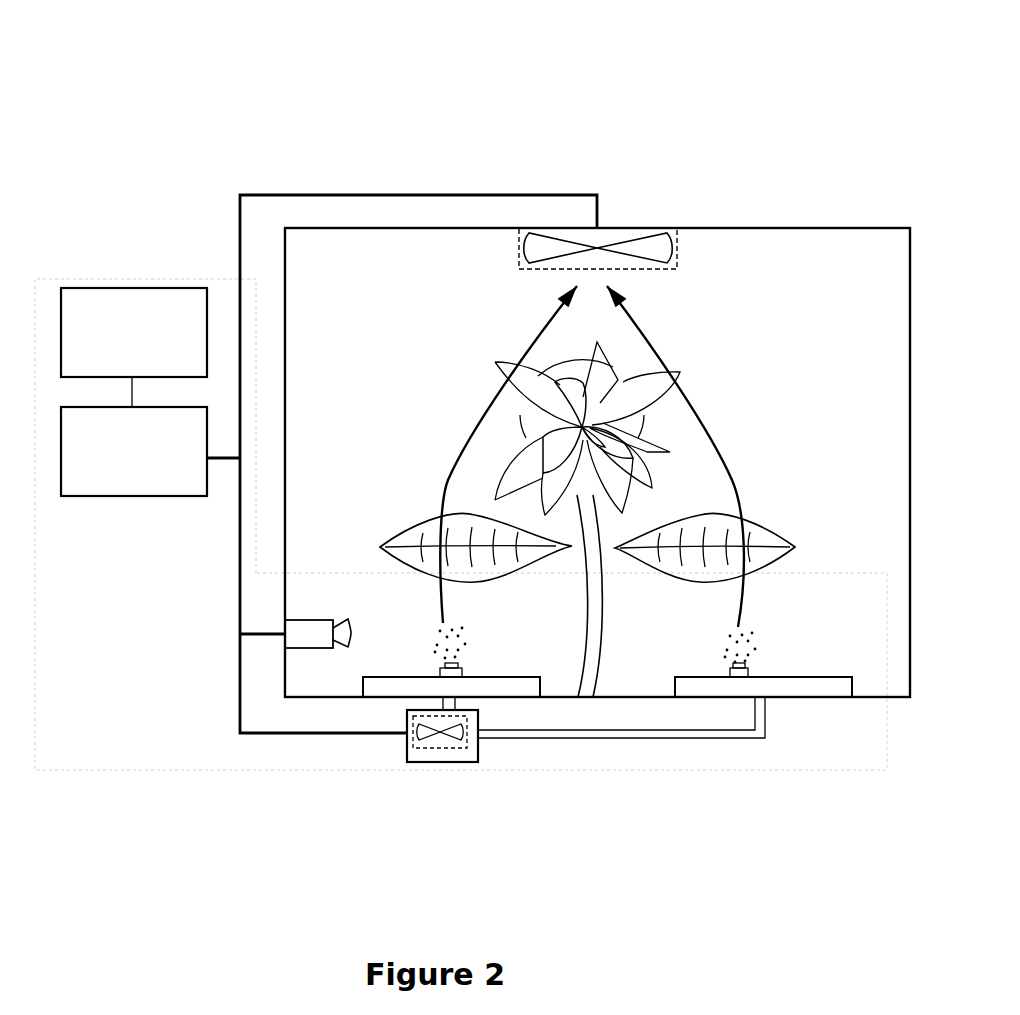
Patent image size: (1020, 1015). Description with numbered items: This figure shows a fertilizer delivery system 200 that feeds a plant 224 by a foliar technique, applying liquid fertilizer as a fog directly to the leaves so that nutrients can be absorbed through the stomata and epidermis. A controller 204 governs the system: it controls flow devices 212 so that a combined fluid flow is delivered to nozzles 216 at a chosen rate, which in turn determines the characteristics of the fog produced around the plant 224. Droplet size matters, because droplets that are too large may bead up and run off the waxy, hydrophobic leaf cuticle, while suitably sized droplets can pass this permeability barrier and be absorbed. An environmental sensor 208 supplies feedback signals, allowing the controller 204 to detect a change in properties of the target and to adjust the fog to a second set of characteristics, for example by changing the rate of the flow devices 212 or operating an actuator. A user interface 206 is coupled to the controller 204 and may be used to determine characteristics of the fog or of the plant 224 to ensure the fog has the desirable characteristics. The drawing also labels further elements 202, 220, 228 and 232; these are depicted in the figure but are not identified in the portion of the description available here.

The fertilizer delivery system 200 is at (167, 62).
The control system housing 202 is at (233, 772).
The controller 204 is at (163, 497).
The user interface 206 is at (143, 279).
The environmental sensor 208 is at (285, 625).
The flow devices 212 is at (478, 752).
The nozzles 216 is at (478, 655).
The conduit 220 is at (415, 626).
The plant 224 is at (480, 358).
The fan 228 is at (677, 248).
The airflow 232 is at (730, 440).